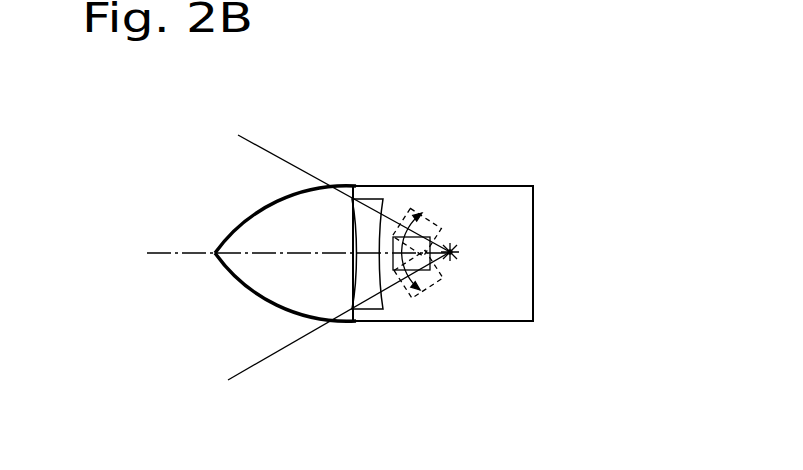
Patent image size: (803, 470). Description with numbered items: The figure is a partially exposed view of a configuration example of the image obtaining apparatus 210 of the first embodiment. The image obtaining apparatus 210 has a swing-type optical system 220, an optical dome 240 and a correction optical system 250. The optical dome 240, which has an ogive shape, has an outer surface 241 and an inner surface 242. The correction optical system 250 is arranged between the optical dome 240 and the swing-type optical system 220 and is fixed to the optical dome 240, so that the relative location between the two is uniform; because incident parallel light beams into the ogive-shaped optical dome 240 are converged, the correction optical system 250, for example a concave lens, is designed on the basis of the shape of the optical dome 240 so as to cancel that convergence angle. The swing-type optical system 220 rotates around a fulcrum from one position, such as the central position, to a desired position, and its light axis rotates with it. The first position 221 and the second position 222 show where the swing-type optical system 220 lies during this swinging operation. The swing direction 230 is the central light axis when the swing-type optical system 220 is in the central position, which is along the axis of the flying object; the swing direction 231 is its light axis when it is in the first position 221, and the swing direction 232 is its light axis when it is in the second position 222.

The image obtaining apparatus 210 is at (204, 209).
The swing-type optical system 220 is at (552, 253).
The first position 221 is at (440, 233).
The second position 222 is at (440, 272).
The swing direction 230 is at (177, 256).
The swing direction 231 is at (260, 142).
The swing direction 232 is at (258, 364).
The optical dome 240 is at (193, 263).
The outer surface 241 is at (267, 198).
The inner surface 242 is at (285, 262).
The correction optical system 250 is at (372, 200).